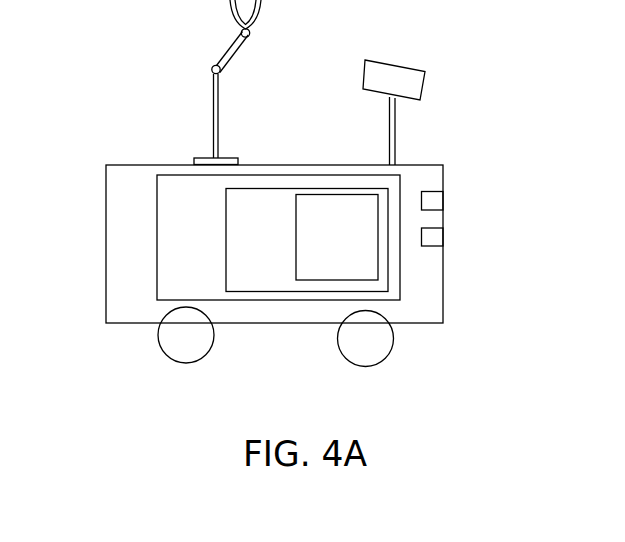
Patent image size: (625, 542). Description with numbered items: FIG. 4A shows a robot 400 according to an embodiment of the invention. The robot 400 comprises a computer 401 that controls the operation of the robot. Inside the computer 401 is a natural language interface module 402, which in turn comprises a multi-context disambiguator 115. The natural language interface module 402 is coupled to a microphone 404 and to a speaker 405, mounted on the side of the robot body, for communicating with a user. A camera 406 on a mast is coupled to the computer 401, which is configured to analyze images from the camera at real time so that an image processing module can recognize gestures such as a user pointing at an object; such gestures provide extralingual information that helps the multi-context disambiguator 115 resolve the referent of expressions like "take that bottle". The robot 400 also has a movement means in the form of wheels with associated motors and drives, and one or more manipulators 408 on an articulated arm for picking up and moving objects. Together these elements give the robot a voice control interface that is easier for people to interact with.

The robot 400 is at (96, 245).
The computer 401 is at (213, 248).
The natural language interface module 402 is at (285, 248).
The multi-context disambiguator 115 is at (359, 250).
The microphone 404 is at (443, 195).
The speaker 405 is at (443, 232).
The camera 406 is at (404, 65).
The manipulators 408 is at (224, 53).